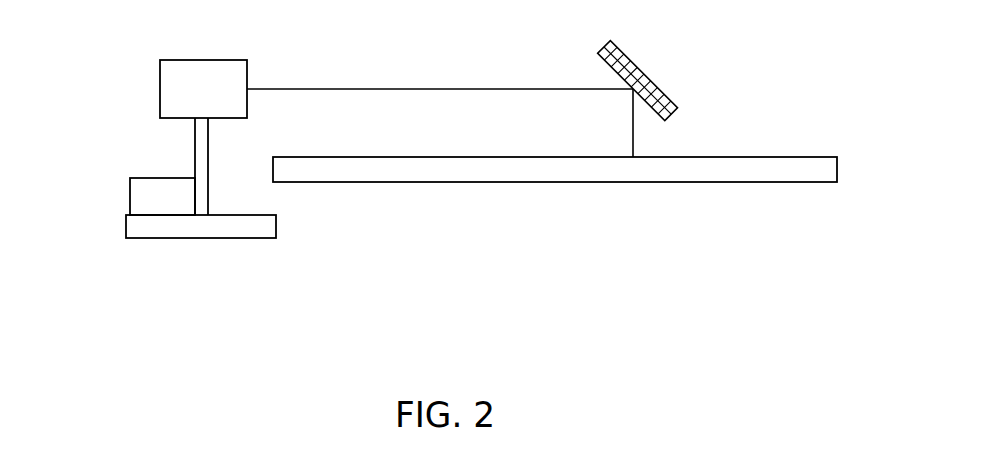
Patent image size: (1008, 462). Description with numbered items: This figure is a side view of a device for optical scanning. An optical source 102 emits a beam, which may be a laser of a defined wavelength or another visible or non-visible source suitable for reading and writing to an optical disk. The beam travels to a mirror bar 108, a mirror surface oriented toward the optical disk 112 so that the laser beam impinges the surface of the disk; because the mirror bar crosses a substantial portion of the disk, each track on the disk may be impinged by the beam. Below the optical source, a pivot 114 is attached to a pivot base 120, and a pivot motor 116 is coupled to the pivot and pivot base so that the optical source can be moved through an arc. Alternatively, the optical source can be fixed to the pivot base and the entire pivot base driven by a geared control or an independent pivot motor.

The optical source 102 is at (160, 92).
The mirror bar 108 is at (661, 91).
The optical disk 112 is at (823, 172).
The pivot 114 is at (195, 147).
The pivot motor 116 is at (130, 185).
The pivot base 120 is at (126, 229).